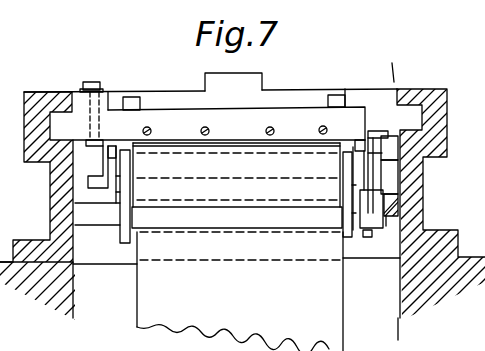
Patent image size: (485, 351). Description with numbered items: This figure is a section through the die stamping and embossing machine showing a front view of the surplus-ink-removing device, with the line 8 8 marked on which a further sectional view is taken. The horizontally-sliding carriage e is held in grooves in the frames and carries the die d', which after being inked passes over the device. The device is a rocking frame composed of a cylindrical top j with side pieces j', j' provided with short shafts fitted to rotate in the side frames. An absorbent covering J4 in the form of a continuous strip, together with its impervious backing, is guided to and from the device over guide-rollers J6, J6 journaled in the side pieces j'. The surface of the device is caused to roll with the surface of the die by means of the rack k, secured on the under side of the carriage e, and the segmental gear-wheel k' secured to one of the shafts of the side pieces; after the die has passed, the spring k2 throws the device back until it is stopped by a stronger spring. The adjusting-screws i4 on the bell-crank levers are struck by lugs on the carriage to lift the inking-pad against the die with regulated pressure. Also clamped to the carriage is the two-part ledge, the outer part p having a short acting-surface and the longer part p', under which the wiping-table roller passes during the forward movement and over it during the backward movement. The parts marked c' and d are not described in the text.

The frame part c' is at (242, 175).
The horizontally-sliding carriage e is at (242, 175).
The cover plate d is at (219, 117).
The die d' is at (235, 129).
The cylindrical top j is at (236, 175).
The side pieces j' is at (233, 207).
The guide-rollers J6 is at (237, 217).
The absorbent covering J4 is at (240, 291).
The outer part of ledge p is at (105, 205).
The ledge part p' is at (99, 167).
The adjusting-screws i4 is at (371, 194).
The rack k is at (389, 148).
The segmental gear-wheel k' is at (389, 177).
The spring k2 is at (386, 222).
The section line 8 8 is at (394, 197).